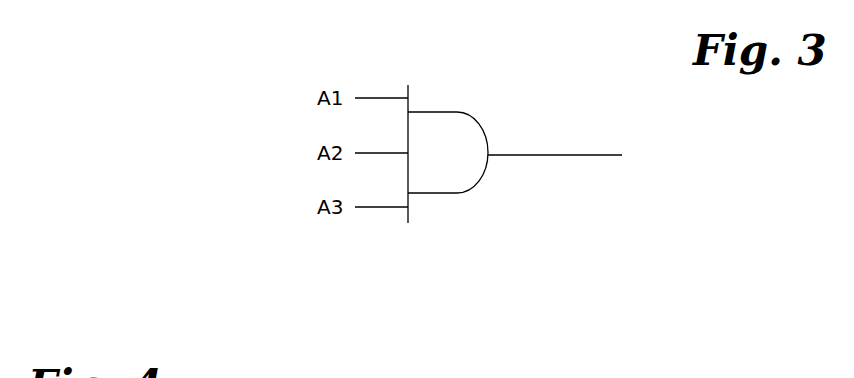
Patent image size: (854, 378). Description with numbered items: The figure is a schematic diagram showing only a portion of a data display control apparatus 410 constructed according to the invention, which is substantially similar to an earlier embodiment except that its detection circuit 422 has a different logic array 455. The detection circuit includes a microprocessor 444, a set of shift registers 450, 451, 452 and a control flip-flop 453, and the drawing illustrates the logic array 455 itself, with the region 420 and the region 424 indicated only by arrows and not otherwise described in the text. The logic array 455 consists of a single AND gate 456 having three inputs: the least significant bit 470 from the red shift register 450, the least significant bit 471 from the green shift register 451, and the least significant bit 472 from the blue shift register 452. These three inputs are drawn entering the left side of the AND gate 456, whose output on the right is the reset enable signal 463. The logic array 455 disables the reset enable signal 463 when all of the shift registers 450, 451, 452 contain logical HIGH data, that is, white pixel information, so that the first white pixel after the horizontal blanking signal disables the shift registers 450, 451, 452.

The data display control apparatus 410 is at (157, 112).
The input terminals 420 is at (250, 85).
The least significant bit 472 is at (366, 98).
The least significant bit 471 is at (373, 153).
The least significant bit 470 is at (385, 207).
The AND gate 456 is at (470, 193).
The reset enable signal 463 is at (570, 155).
The control flip-flop 453 is at (477, 72).
The microprocessor 444 is at (542, 98).
The logic array 455 is at (315, 248).
The detection circuit 422 is at (342, 302).
The third input signal 424 is at (370, 340).
The red shift register 450 is at (473, 250).
The green shift register 451 is at (435, 290).
The blue shift register 452 is at (420, 328).